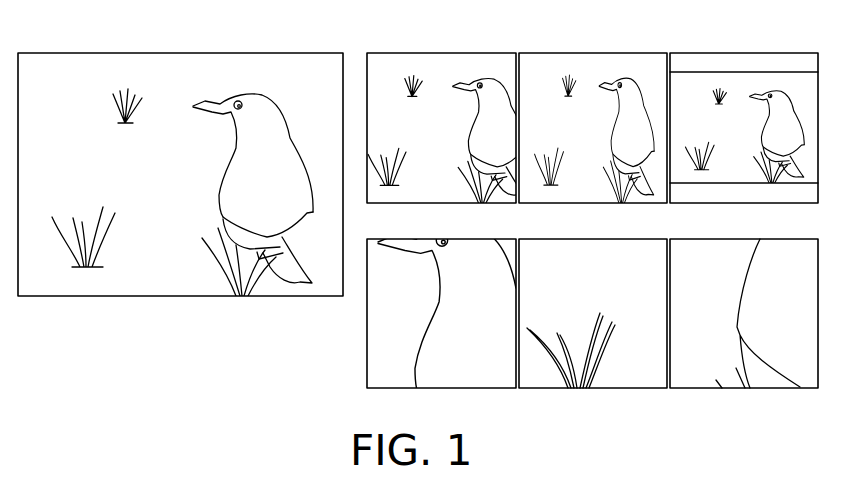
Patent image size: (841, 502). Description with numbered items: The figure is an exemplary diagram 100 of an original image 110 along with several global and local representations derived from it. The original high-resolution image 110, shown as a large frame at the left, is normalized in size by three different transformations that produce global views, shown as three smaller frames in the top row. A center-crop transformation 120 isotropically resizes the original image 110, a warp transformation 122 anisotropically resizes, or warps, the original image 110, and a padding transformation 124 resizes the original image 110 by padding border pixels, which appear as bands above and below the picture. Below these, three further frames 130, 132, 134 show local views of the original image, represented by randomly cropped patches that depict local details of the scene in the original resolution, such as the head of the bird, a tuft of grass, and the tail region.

The exemplary diagram 100 is at (158, 378).
The original image 110 is at (195, 53).
The center-crop transformation 120 is at (431, 53).
The warp transformation 122 is at (585, 53).
The padding transformation 124 is at (731, 53).
The first zoomed image crop 130 is at (431, 239).
The second zoomed image crop 132 is at (585, 239).
The third zoomed image crop 134 is at (731, 239).